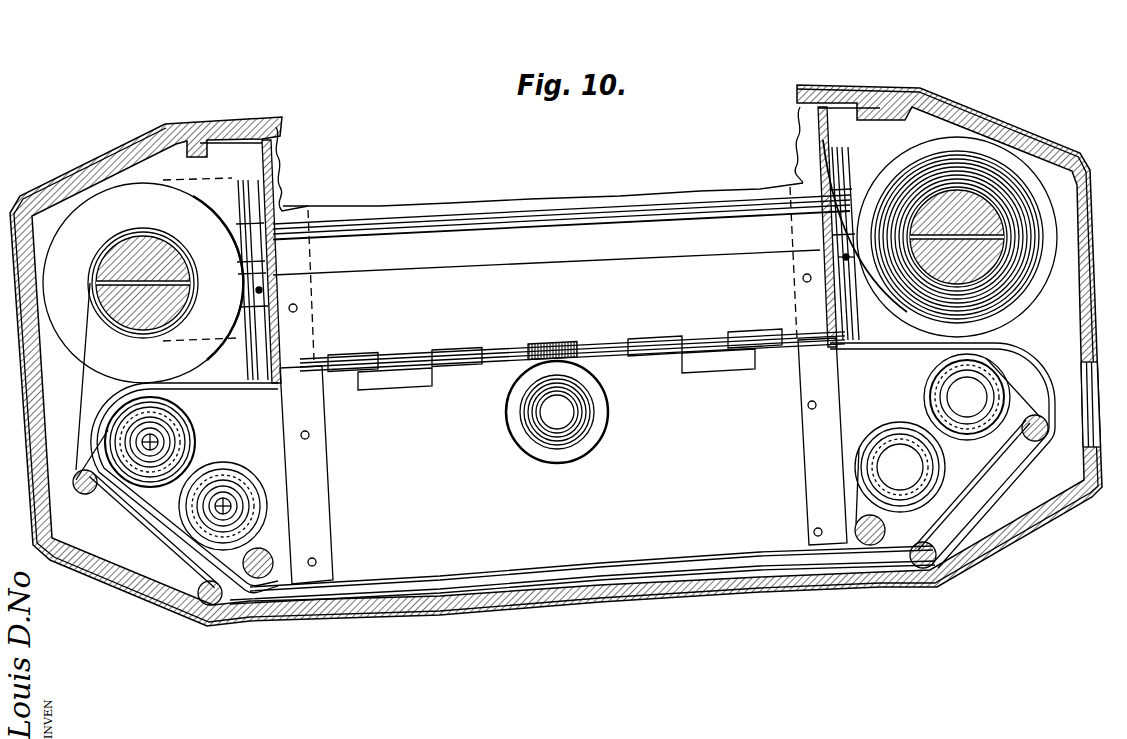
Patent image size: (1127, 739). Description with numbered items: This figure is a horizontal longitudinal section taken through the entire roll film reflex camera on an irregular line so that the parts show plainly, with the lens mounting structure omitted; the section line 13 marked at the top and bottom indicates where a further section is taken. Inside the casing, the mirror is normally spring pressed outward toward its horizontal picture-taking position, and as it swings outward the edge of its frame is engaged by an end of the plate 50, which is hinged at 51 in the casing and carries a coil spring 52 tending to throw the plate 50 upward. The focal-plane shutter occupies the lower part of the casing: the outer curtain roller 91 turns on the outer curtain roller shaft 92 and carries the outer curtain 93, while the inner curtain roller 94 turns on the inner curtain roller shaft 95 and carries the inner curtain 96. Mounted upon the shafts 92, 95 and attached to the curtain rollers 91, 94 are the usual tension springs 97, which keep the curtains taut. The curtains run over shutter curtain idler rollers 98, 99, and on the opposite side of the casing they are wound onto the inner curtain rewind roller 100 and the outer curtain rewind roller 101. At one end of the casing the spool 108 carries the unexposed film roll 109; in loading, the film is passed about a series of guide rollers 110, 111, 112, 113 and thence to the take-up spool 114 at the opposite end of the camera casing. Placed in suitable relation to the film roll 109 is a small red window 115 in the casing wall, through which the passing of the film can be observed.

The section line 13- 13 is at (820, 85).
The plate 50 is at (582, 250).
The hinge 51 is at (467, 360).
The coil spring 52 is at (557, 344).
The outer curtain roller 91 is at (173, 445).
The outer curtain roller shaft 92 is at (163, 422).
The outer curtain 93 is at (150, 493).
The inner curtain roller 94 is at (238, 480).
The inner curtain roller shaft 95 is at (222, 500).
The inner curtain 96 is at (563, 567).
The tension springs 97 is at (133, 427).
The shutter curtain idler roller 98 is at (273, 555).
The shutter curtain idler roller 99 is at (855, 523).
The inner curtain rewind roller 100 is at (888, 440).
The outer curtain rewind roller 101 is at (943, 382).
The spool 108 is at (930, 207).
The film roll 109 is at (957, 228).
The guide roller 110 is at (1040, 442).
The guide roller 111 is at (942, 582).
The guide roller 112 is at (216, 608).
The guide roller 113 is at (83, 496).
The take-up spool 114 is at (128, 253).
The red window 115 is at (1087, 390).